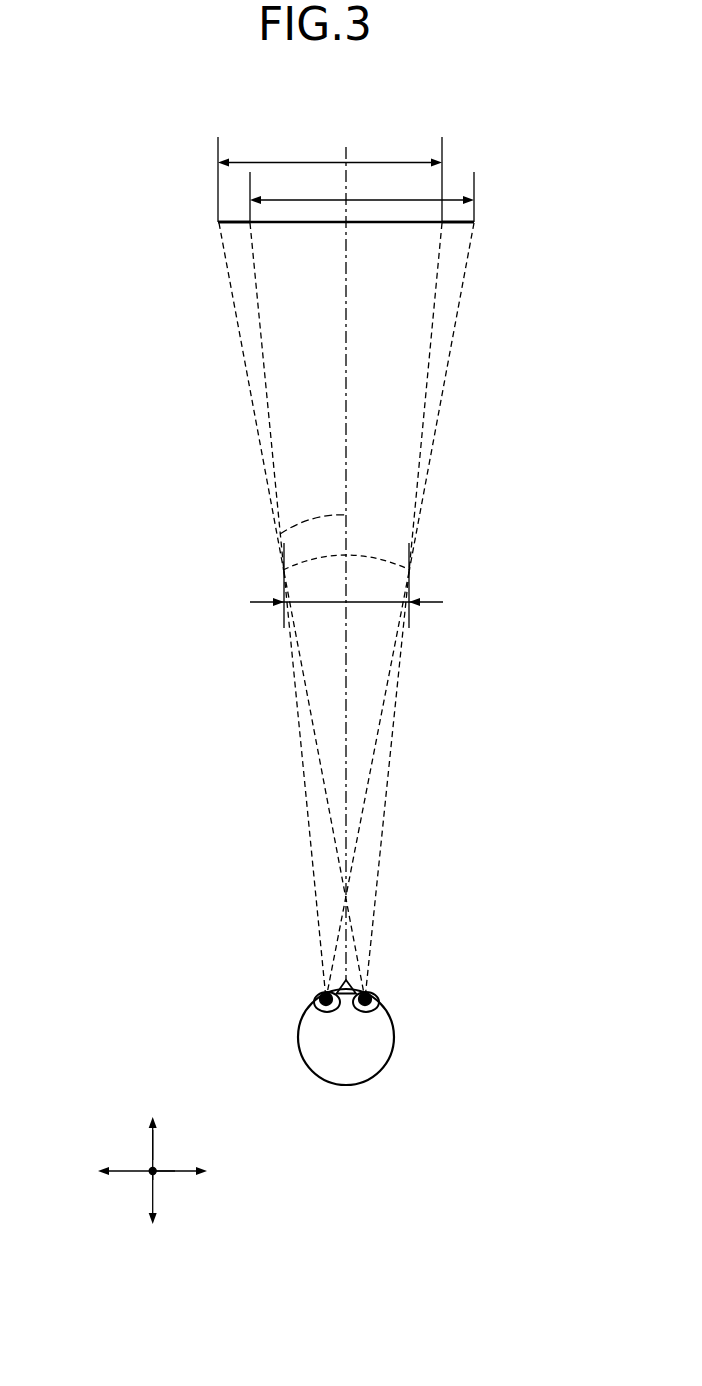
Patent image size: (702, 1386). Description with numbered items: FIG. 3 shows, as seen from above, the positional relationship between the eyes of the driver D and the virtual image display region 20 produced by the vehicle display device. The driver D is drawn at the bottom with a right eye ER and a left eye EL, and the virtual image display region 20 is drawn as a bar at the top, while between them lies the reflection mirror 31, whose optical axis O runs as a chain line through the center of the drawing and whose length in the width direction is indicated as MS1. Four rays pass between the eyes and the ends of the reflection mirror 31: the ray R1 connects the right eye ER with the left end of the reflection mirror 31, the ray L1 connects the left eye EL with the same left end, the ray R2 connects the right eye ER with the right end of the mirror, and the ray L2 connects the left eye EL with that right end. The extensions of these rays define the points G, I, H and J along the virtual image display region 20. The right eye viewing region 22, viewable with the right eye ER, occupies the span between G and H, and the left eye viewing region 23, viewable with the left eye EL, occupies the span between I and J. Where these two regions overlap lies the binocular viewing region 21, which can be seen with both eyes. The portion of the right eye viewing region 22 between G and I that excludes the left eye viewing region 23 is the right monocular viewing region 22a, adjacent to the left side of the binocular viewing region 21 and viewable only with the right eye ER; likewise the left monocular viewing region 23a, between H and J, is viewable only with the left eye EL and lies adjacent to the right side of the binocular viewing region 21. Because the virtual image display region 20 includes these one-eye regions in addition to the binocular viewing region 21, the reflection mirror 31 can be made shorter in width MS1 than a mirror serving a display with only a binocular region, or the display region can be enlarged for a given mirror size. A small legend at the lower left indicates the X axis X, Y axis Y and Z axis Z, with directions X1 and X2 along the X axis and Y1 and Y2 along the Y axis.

The virtual image display region 20 is at (277, 244).
The binocular viewing region 21 is at (398, 224).
The right eye viewing region 22 is at (282, 161).
The left eye viewing region 23 is at (387, 199).
The right monocular viewing region 22a is at (237, 221).
The left monocular viewing region 23a is at (451, 221).
The left end of virtual image display region G is at (218, 222).
The left end of binocular viewing region I is at (249, 225).
The right end of right eye viewing region H is at (443, 225).
The right end of left eye viewing region J is at (474, 222).
The ray R1 is at (249, 393).
The ray L1 is at (271, 440).
The ray R2 is at (430, 388).
The ray L2 is at (433, 437).
The optical axis O is at (281, 534).
The reflection mirror 31 is at (372, 557).
The length of reflection mirror in width direction MS1 is at (369, 603).
The left eye EL is at (313, 993).
The right eye ER is at (380, 993).
The driver D is at (299, 1053).
The Y1 direction Y1 is at (152, 1129).
The Y2 direction Y2 is at (152, 1212).
The X1 direction X1 is at (108, 1170).
The X2 direction X2 is at (198, 1170).
The X axis X is at (175, 1172).
The Y axis Y is at (155, 1143).
The Z axis Z is at (152, 1175).